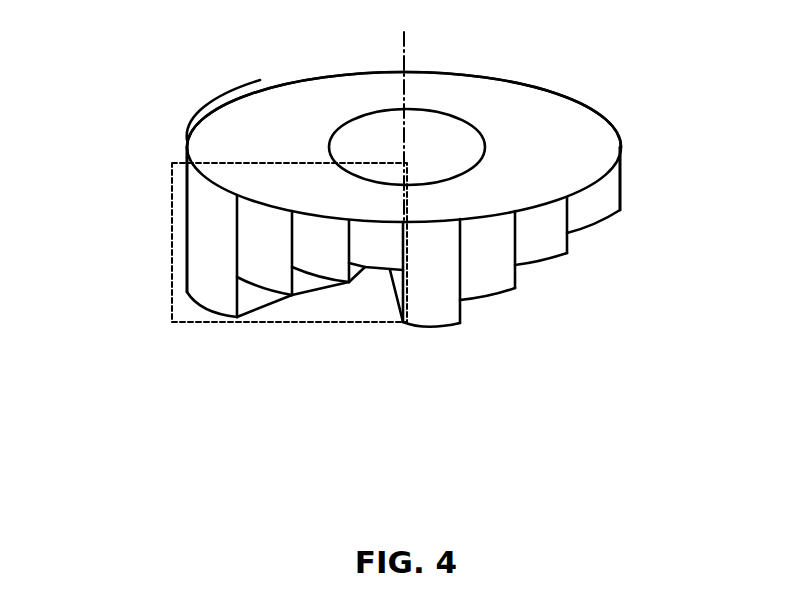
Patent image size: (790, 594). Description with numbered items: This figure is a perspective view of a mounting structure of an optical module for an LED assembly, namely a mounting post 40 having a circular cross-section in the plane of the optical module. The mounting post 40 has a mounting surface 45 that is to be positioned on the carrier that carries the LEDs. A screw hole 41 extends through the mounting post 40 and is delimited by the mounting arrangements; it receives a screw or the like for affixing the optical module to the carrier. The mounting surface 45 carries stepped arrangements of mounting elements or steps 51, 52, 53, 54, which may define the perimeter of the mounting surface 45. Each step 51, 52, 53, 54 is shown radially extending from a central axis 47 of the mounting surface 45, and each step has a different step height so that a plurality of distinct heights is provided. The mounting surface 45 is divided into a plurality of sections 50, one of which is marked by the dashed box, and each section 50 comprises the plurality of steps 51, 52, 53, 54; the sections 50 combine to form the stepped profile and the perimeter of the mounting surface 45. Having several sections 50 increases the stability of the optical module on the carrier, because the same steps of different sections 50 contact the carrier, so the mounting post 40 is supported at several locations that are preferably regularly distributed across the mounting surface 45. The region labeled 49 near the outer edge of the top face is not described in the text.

The mounting post 40 is at (400, 515).
The screw hole 41 is at (457, 148).
The mounting surface 45 is at (580, 137).
The central axis 47 is at (402, 53).
The outer periphery 49 is at (222, 148).
The section 50 is at (172, 227).
The step 51 is at (212, 297).
The step 52 is at (272, 283).
The step 53 is at (327, 260).
The step 54 is at (375, 253).